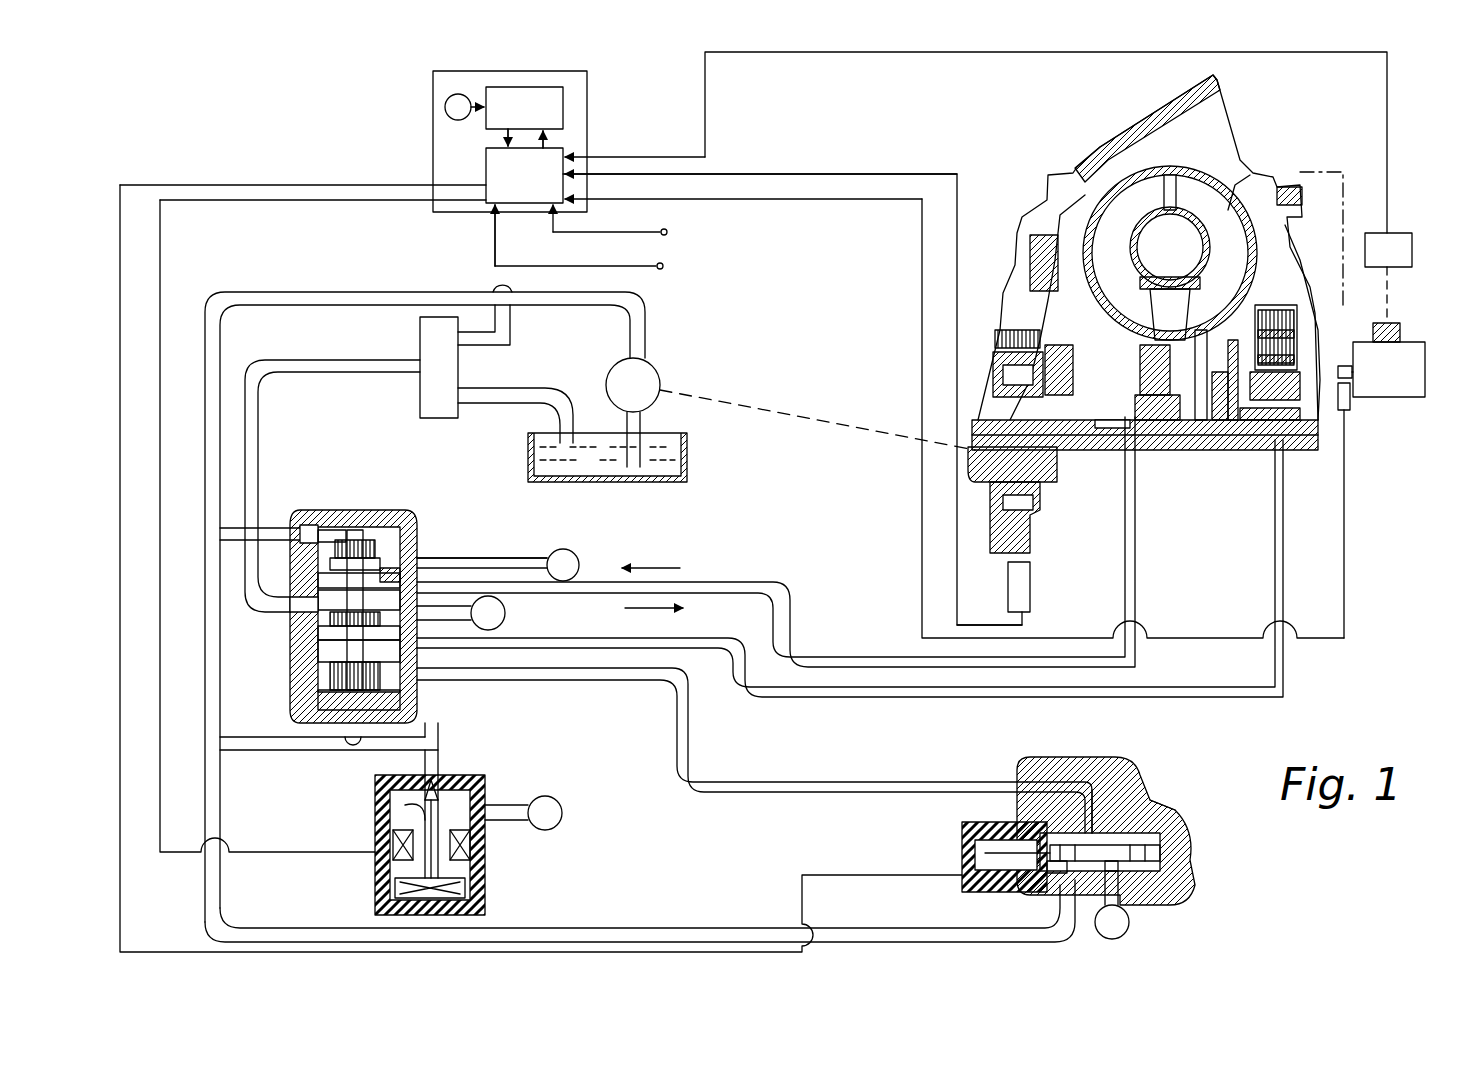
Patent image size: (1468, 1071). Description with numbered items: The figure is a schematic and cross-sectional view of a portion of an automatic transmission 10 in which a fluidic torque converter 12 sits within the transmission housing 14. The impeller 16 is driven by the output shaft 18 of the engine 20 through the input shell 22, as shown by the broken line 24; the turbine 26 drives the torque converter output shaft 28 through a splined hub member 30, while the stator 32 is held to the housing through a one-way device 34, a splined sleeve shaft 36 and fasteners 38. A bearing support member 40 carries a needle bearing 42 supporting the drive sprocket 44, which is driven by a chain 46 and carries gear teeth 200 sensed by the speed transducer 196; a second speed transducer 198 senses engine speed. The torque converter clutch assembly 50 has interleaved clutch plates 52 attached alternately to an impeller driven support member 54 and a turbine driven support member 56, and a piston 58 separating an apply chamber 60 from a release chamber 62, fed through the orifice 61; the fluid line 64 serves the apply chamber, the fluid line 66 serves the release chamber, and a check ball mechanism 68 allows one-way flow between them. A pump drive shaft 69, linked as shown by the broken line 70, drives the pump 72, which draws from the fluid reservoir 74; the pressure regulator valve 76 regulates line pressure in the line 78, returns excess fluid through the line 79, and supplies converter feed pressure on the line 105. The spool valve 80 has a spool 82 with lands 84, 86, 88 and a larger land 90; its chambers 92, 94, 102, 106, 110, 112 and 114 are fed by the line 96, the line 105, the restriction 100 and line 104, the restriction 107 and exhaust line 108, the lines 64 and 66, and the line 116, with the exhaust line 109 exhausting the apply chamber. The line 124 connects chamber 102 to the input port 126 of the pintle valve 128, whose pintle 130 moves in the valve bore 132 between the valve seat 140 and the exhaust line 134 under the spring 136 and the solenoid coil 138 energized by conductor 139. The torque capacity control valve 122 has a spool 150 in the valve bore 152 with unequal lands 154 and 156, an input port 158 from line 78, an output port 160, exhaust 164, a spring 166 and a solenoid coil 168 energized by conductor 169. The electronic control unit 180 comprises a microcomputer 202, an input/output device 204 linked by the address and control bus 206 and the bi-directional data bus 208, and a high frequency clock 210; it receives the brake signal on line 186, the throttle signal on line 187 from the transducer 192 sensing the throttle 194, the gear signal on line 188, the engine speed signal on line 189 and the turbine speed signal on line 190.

The automatic transmission 10 is at (1070, 140).
The torque converter 12 is at (1205, 128).
The transmission housing 14 is at (1168, 105).
The impeller 16 is at (1150, 185).
The output shaft 18 is at (1338, 378).
The engine 20 is at (1400, 397).
The input shell 22 is at (1280, 235).
The broken line 24 is at (1345, 228).
The turbine 26 is at (1245, 178).
The torque converter output shaft 28 is at (1095, 450).
The splined hub member 30 is at (1205, 440).
The stator 32 is at (1135, 240).
The one-way device 34 is at (1190, 330).
The splined sleeve shaft 36 is at (1165, 450).
The fasteners 38 is at (1140, 284).
The bearing support member 40 is at (995, 375).
The needle bearing 42 is at (1000, 342).
The drive sprocket 44 is at (1040, 545).
The chain 46 is at (1010, 355).
The torque converter clutch assembly 50 is at (1295, 298).
The clutch plates 52 is at (1296, 334).
The impeller driven support member 54 is at (1296, 360).
The turbine driven support member 56 is at (1296, 312).
The piston 58 is at (1300, 388).
The apply chamber 60 is at (1235, 450).
The orifice 61 is at (1270, 440).
The release chamber 62 is at (1222, 440).
The fluid line 64 is at (592, 638).
The fluid line 66 is at (708, 582).
The check ball mechanism 68 is at (1180, 450).
The pump drive shaft 69 is at (1112, 450).
The broken line 70 is at (775, 418).
The hydraulic pump 72 is at (655, 367).
The fluid reservoir 74 is at (685, 465).
The pressure regulator valve 76 is at (428, 418).
The line 78 is at (250, 292).
The line 79 is at (548, 395).
The spool valve 80 is at (352, 470).
The spool 82 is at (360, 528).
The land 84 is at (372, 540).
The land 86 is at (380, 562).
The land 88 is at (380, 618).
The land 90 is at (330, 650).
The valve chamber 92 is at (332, 528).
The valve chamber 94 is at (330, 603).
The line 96 is at (272, 527).
The restriction 100 is at (340, 750).
The valve chamber 102 is at (330, 697).
The line 104 is at (440, 710).
The pressure regulator output line 105 is at (275, 378).
The valve chamber 106 is at (318, 578).
The restriction 107 is at (520, 558).
The exhaust line 108 is at (482, 558).
The exhaust line 109 is at (480, 615).
The valve chamber 110 is at (318, 633).
The valve chamber 112 is at (400, 572).
The valve chamber 114 is at (330, 675).
The line 116 is at (688, 748).
The torque capacity control valve 122 is at (1053, 752).
The line 124 is at (445, 775).
The input port 126 is at (436, 785).
The pintle valve 128 is at (495, 775).
The pintle 130 is at (393, 845).
The valve bore 132 is at (405, 805).
The exhaust line 134 is at (515, 822).
The spring 136 is at (395, 890).
The solenoid coil 138 is at (470, 850).
The conductor 139 is at (215, 202).
The valve seat 140 is at (420, 800).
The spool 150 is at (1148, 845).
The valve bore 152 is at (1110, 835).
The land 154 is at (1115, 870).
The land 156 is at (1050, 875).
The input port 158 is at (1105, 895).
The output port 160 is at (1035, 785).
The exhaust port 164 is at (1130, 920).
The spring 166 is at (1165, 852).
The solenoid coil 168 is at (1010, 825).
The conductor 169 is at (215, 172).
The electronic control unit 180 is at (470, 64).
The line 186 is at (505, 265).
The line 187 is at (612, 157).
The line 188 is at (640, 236).
The line 189 is at (718, 200).
The line 190 is at (755, 172).
The transducer 192 is at (1408, 233).
The engine throttle 194 is at (1380, 345).
The speed transducer 196 is at (1031, 585).
The speed transducer 198 is at (1350, 412).
The gear teeth 200 is at (1010, 560).
The microcomputer 202 is at (555, 87).
The input/output device 204 is at (560, 130).
The address and control bus 206 is at (500, 135).
The bi-directional data bus 208 is at (540, 135).
The high frequency clock 210 is at (445, 107).